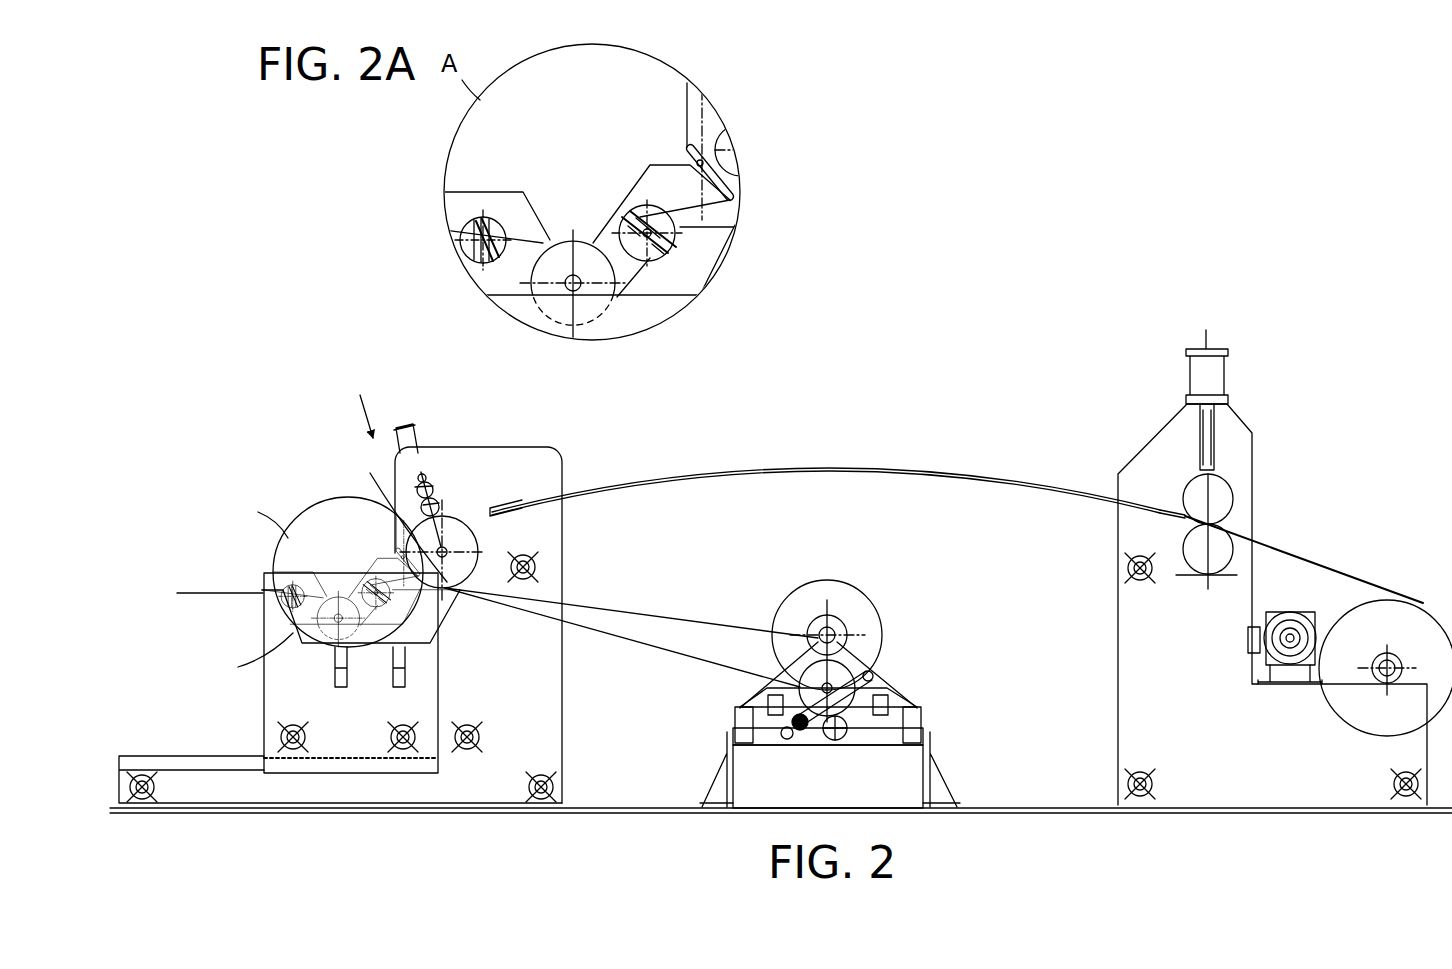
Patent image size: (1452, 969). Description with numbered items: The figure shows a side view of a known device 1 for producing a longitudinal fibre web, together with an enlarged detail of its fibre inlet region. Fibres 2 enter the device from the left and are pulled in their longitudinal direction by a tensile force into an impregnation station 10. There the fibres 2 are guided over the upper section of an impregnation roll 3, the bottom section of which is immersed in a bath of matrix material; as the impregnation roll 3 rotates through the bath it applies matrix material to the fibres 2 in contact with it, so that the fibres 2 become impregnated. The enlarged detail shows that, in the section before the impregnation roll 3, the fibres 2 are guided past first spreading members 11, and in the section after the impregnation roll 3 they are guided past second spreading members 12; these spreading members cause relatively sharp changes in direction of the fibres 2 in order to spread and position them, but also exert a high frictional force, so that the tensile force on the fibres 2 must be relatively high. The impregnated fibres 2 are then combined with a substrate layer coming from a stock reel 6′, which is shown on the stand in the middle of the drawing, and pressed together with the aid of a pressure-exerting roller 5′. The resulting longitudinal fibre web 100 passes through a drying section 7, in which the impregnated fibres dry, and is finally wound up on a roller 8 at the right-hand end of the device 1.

In FIG. 2, the device 1 is at (981, 190).
In FIG. 2, the fibres 2 is at (240, 593).
In FIG. 2A, the impregnation roll 3 is at (585, 258).
In FIG. 2, the pressure-exerting roller 5′ is at (422, 537).
In FIG. 2, the stock reel 6′ is at (860, 612).
In FIG. 2, the drying section 7 is at (1040, 426).
In FIG. 2, the roller 8 is at (1412, 626).
In FIG. 2, the impregnation station 10 is at (305, 498).
In FIG. 2A, the first spreading members 11 is at (494, 212).
In FIG. 2A, the second spreading members 12 is at (630, 176).
In FIG. 2, the longitudinal fibre web 100 is at (1286, 550).